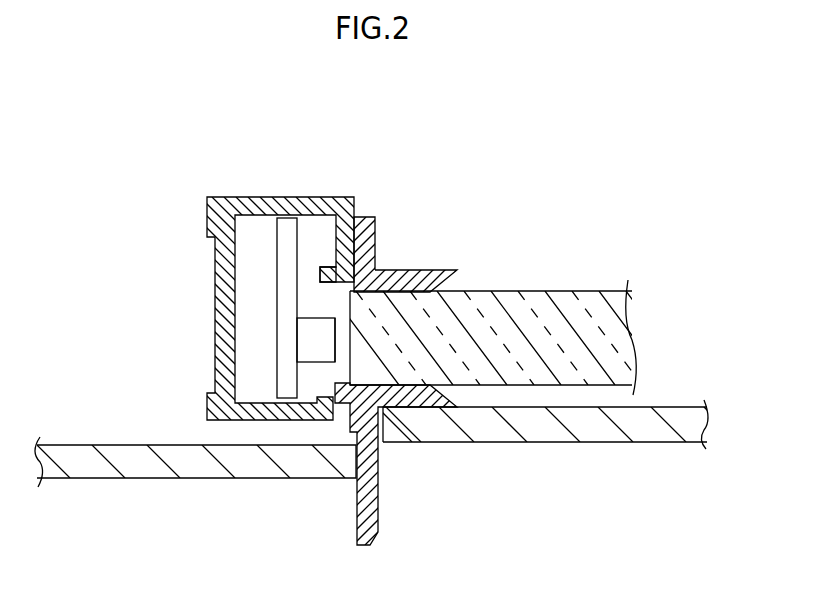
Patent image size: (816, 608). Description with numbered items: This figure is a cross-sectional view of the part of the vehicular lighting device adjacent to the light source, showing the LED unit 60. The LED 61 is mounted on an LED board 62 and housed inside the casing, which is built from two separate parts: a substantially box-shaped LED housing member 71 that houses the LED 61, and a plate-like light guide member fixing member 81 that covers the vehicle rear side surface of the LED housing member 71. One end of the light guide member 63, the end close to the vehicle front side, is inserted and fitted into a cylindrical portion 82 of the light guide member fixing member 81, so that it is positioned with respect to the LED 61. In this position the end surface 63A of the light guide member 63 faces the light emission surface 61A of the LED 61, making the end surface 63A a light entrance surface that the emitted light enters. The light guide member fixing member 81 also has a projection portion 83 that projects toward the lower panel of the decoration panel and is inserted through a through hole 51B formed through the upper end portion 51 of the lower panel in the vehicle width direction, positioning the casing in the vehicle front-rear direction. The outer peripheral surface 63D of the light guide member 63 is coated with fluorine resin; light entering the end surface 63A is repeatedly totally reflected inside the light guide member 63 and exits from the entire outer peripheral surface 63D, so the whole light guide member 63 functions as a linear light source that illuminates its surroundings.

The LED unit 60 is at (158, 196).
The LED housing member 71 is at (250, 205).
The end surface 63A is at (328, 268).
The LED board 62 is at (283, 360).
The LED 61 is at (318, 347).
The light emission surface 61A is at (341, 330).
The light guide member fixing member 81 is at (367, 247).
The cylindrical portion 82 is at (417, 276).
The projection portion 83 is at (368, 506).
The light guide member 63 is at (600, 333).
The outer peripheral surface 63D is at (587, 290).
The upper end portion 51 is at (492, 427).
The through hole 51B is at (388, 446).